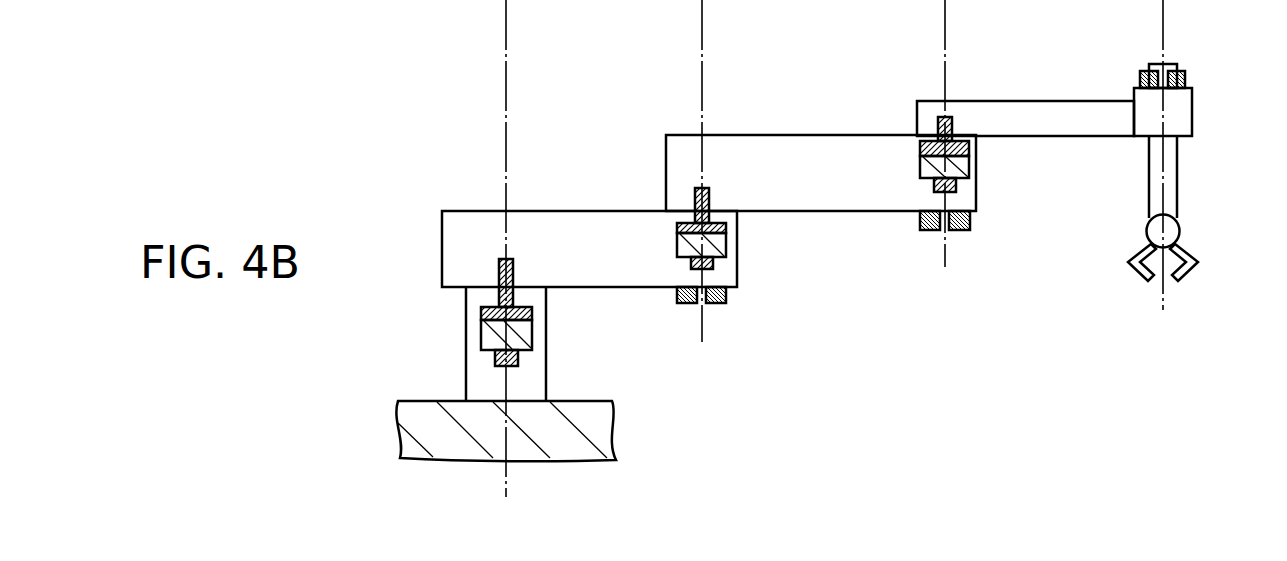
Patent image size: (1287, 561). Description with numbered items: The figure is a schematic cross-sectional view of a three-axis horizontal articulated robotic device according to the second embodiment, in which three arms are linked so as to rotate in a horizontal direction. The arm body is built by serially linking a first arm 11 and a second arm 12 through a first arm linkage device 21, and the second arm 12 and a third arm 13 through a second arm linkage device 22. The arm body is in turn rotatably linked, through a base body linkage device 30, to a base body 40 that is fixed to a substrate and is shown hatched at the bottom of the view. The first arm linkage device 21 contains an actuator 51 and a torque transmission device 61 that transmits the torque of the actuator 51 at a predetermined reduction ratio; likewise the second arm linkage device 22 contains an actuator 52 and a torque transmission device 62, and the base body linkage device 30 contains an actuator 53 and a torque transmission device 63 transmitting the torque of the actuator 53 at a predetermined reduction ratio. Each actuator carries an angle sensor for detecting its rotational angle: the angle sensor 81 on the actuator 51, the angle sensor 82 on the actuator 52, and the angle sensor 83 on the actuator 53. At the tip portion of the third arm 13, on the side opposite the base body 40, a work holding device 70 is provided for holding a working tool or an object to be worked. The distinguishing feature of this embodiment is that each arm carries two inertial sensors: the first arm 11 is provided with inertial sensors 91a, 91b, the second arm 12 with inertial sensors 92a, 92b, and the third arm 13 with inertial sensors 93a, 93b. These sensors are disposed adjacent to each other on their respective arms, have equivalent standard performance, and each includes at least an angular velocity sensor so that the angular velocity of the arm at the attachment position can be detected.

The first arm 11 is at (587, 210).
The second arm 12 is at (812, 133).
The third arm 13 is at (1048, 100).
The first arm linkage device 21 is at (689, 245).
The second arm linkage device 22 is at (933, 172).
The base body linkage device 30 is at (503, 314).
The base body 40 is at (535, 380).
The actuator 51 is at (722, 248).
The actuator 52 is at (965, 168).
The actuator 53 is at (522, 333).
The torque transmission device 61 is at (727, 226).
The torque transmission device 62 is at (970, 147).
The torque transmission device 63 is at (530, 318).
The work holding device 70 is at (1152, 182).
The angle sensor 81 is at (713, 262).
The angle sensor 82 is at (956, 184).
The angle sensor 83 is at (517, 360).
The inertial sensor 91a is at (674, 303).
The inertial sensor 91b is at (728, 303).
The inertial sensor 92a is at (918, 231).
The inertial sensor 92b is at (972, 231).
The inertial sensor 93a is at (1138, 78).
The inertial sensor 93b is at (1188, 78).